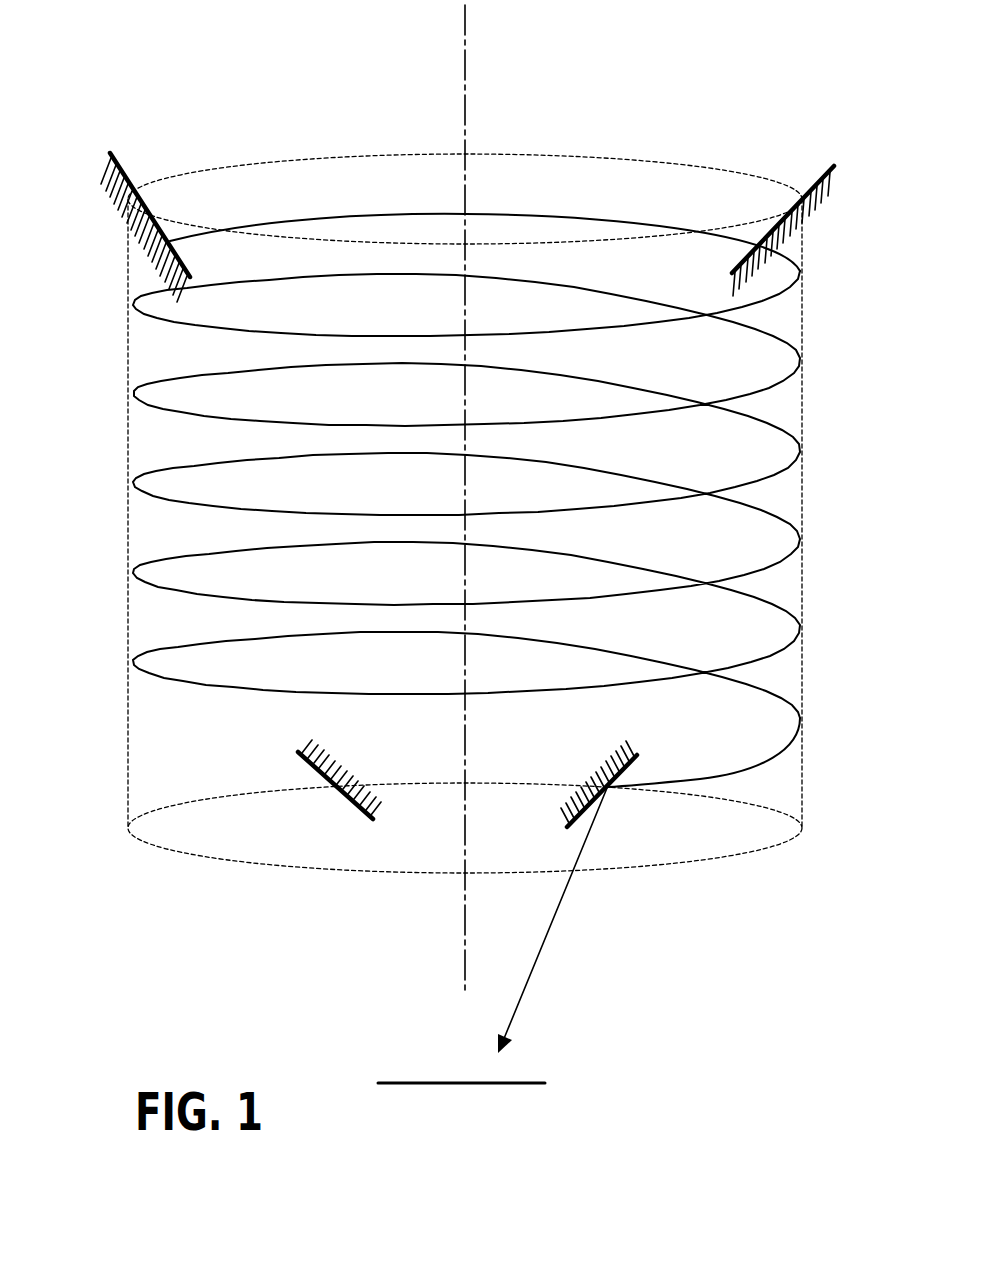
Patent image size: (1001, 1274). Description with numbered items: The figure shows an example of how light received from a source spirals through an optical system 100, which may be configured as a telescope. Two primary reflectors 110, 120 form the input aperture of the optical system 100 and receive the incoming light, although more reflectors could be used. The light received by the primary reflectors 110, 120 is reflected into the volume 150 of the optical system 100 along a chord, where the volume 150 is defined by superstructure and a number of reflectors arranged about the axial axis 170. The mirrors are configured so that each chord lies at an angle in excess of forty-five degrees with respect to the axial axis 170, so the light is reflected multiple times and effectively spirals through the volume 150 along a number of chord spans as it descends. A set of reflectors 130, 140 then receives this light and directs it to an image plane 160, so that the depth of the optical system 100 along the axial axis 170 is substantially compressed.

The optical system 100 is at (122, 63).
The primary reflector 110 is at (128, 178).
The primary reflector 120 is at (833, 167).
The reflector 130 is at (299, 753).
The reflector 140 is at (637, 755).
The volume 150 is at (128, 742).
The image plane 160 is at (545, 1083).
The axial axis 170 is at (466, 950).